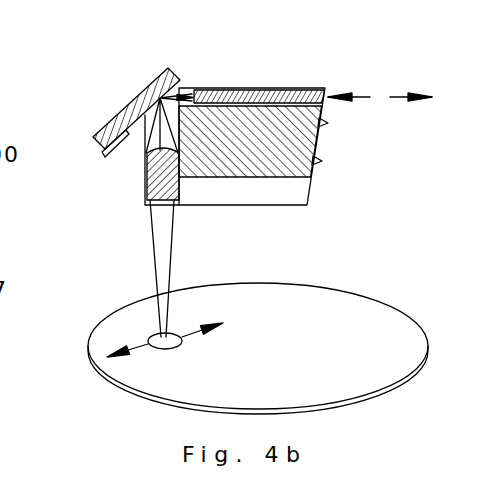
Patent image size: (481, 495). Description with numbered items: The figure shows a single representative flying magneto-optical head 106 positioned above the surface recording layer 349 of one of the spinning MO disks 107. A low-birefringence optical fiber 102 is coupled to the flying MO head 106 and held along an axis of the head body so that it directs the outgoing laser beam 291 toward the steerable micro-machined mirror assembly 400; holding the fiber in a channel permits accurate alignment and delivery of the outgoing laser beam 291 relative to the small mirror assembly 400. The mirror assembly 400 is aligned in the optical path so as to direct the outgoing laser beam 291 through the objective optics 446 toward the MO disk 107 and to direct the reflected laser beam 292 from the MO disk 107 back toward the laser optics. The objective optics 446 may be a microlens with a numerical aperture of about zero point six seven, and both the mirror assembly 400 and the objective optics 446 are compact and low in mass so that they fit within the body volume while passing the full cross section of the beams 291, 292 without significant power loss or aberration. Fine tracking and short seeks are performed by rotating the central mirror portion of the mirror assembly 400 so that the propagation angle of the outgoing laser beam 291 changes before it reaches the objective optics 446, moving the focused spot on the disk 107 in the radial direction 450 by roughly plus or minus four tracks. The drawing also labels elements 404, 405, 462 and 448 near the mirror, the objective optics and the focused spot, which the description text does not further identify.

The flying MO head 106 is at (268, 33).
The low-birefringence optical fiber 102 is at (290, 88).
The outgoing laser beam 291 is at (370, 97).
The reflected laser beam 292 is at (400, 97).
The steerable micro-machined mirror assembly 400 is at (112, 119).
The mirror holder 404 is at (100, 160).
The mirror actuator 405 is at (115, 143).
The objective optics 446 is at (147, 196).
The lens holder 462 is at (150, 203).
The light spot 448 is at (182, 340).
The surface recording layer 349 is at (292, 317).
The spinning MO disk 107 is at (107, 316).
The radial direction 450 is at (142, 347).